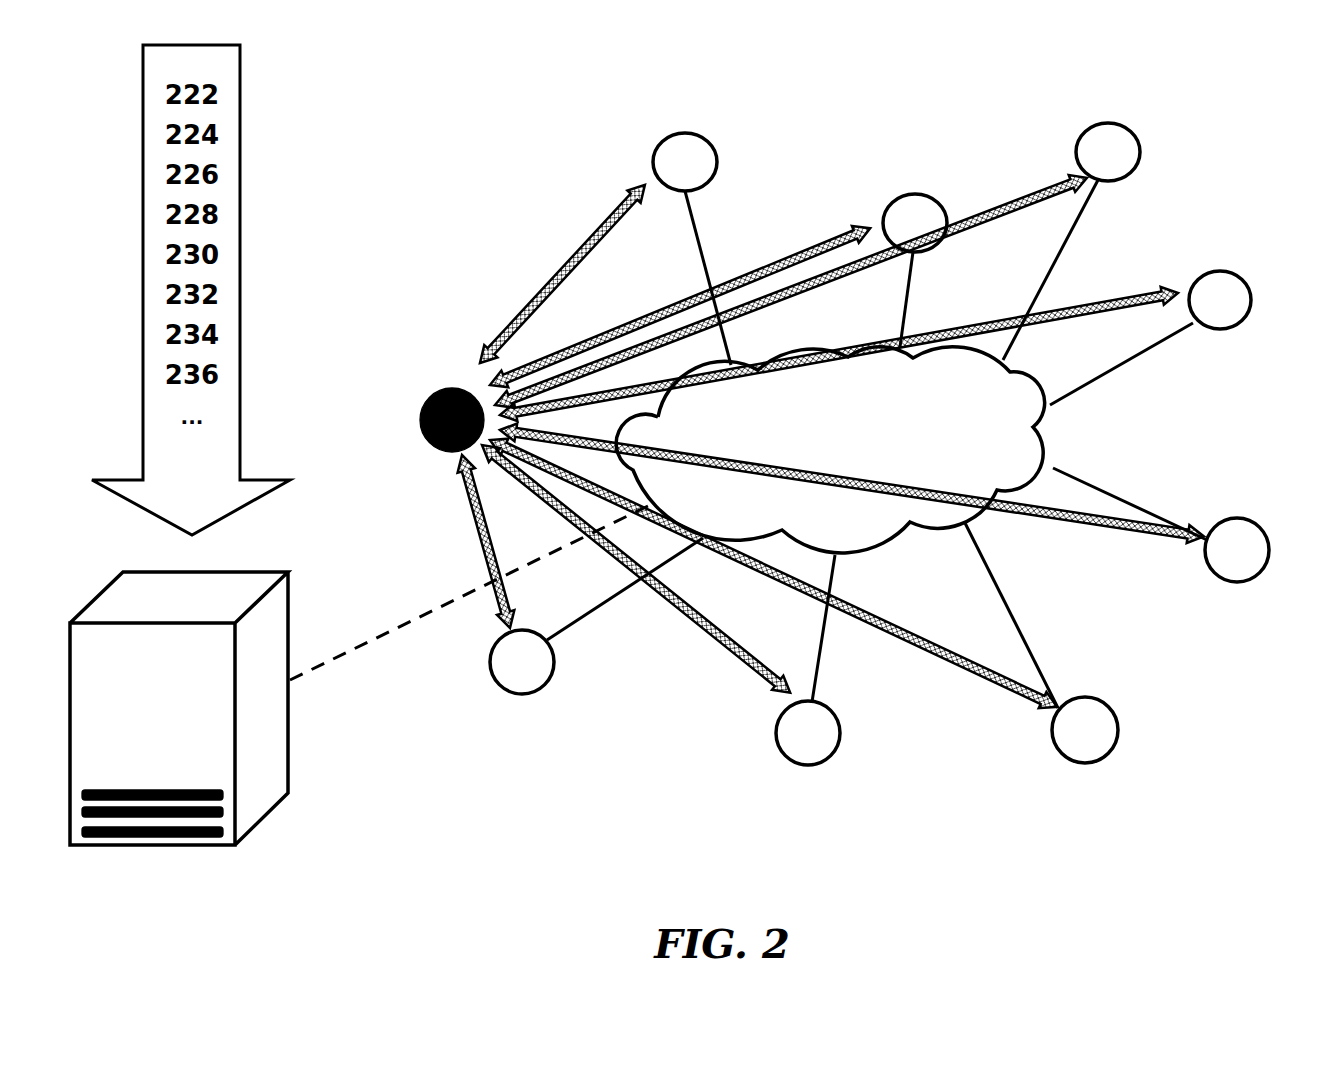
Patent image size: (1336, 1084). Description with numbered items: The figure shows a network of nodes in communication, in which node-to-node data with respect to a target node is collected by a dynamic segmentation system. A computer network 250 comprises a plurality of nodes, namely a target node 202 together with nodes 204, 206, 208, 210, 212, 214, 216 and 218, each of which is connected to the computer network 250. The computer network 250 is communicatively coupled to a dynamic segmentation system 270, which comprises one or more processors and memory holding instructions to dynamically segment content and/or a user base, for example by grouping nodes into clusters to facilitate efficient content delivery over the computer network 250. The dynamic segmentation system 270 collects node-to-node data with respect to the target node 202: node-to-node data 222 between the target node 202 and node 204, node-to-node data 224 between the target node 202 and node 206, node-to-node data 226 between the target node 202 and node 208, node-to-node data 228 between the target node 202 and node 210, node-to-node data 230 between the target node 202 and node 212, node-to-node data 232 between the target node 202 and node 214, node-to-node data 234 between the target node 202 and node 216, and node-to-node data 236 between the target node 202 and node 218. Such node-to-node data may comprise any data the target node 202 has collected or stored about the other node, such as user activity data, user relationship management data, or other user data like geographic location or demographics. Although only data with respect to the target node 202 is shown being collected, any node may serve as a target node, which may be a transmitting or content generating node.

The target node 202 is at (452, 390).
The node 204 is at (720, 152).
The node 206 is at (943, 205).
The node 208 is at (1142, 152).
The node 210 is at (1252, 302).
The node 212 is at (1258, 580).
The node 214 is at (1118, 748).
The node 216 is at (793, 762).
The node 218 is at (508, 693).
The node-to-node data 222 is at (560, 270).
The node-to-node data 224 is at (840, 235).
The node-to-node data 226 is at (1052, 190).
The node-to-node data 228 is at (1130, 290).
The node-to-node data 230 is at (1163, 522).
The node-to-node data 232 is at (972, 680).
The node-to-node data 234 is at (714, 646).
The node-to-node data 236 is at (468, 512).
The computer network 250 is at (830, 450).
The dynamic segmentation system 270 is at (179, 708).